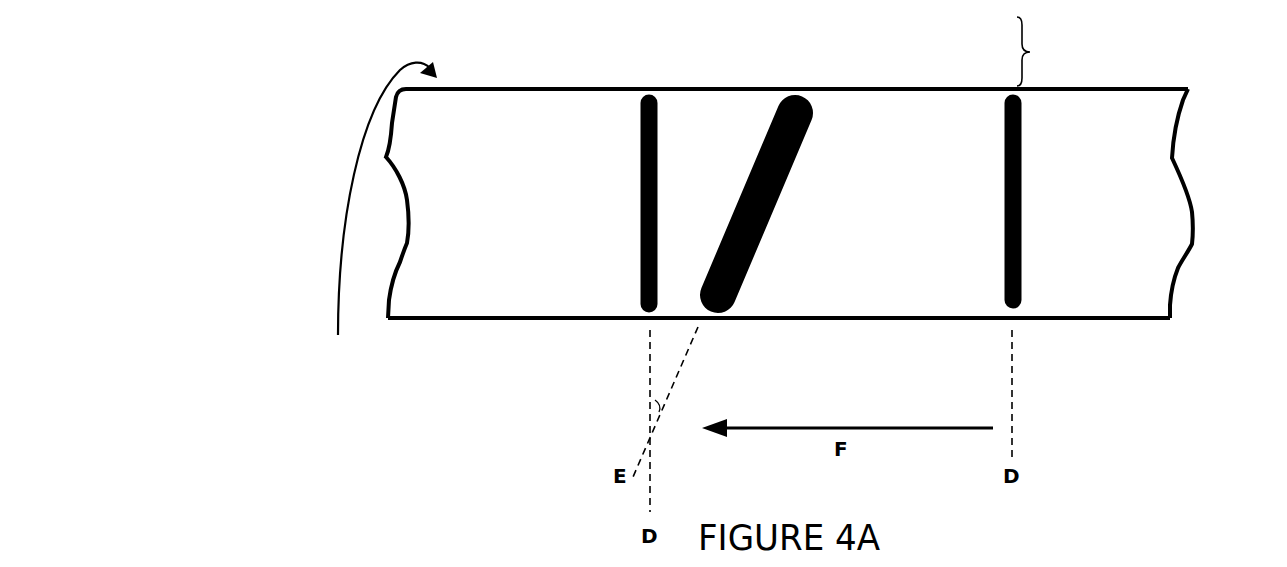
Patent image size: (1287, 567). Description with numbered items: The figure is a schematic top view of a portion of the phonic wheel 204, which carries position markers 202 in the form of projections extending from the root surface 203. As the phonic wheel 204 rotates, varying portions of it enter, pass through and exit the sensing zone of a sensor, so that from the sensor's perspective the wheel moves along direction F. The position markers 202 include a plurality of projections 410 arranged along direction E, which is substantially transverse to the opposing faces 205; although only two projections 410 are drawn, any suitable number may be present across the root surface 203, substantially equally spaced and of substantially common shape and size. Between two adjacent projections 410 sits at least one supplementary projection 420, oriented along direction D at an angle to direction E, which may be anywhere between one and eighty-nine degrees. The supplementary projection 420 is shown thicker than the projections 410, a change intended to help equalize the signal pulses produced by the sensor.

The position markers 202 is at (1050, 51).
The root surface 203 is at (1135, 157).
The phonic wheel 204 is at (303, 206).
The opposing faces 205 is at (453, 342).
The projections 410 is at (640, 128).
The supplementary projection 420 is at (770, 128).